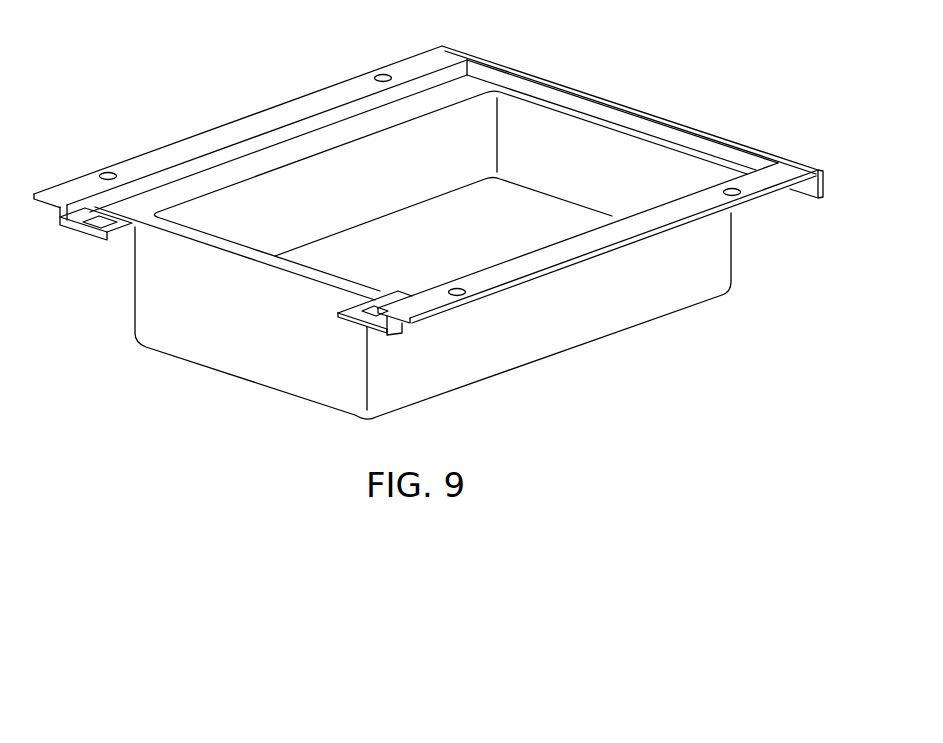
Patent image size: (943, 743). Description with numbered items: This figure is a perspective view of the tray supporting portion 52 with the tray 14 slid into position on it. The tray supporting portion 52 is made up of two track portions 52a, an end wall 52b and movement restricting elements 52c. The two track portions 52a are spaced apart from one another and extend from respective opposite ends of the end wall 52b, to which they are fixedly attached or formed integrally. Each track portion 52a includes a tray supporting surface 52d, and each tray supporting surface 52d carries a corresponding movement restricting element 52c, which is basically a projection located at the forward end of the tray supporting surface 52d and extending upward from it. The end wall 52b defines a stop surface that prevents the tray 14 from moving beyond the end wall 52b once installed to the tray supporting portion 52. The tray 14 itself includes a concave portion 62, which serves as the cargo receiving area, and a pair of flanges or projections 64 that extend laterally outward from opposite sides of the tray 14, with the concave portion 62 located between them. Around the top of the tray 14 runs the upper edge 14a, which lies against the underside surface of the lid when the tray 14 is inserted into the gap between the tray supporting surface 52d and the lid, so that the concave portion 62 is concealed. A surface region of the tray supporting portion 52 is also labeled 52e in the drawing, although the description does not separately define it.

The tray 14 is at (224, 376).
The upper edge 14a is at (258, 158).
The tray supporting portion 52 is at (318, 90).
The track portions 52a is at (57, 215).
The end wall 52b is at (583, 107).
The movement restricting elements 52c is at (102, 222).
The tray supporting surface 52d is at (78, 217).
The frame top surface 52e is at (420, 62).
The concave portion 62 is at (513, 222).
The projections 64 is at (157, 197).